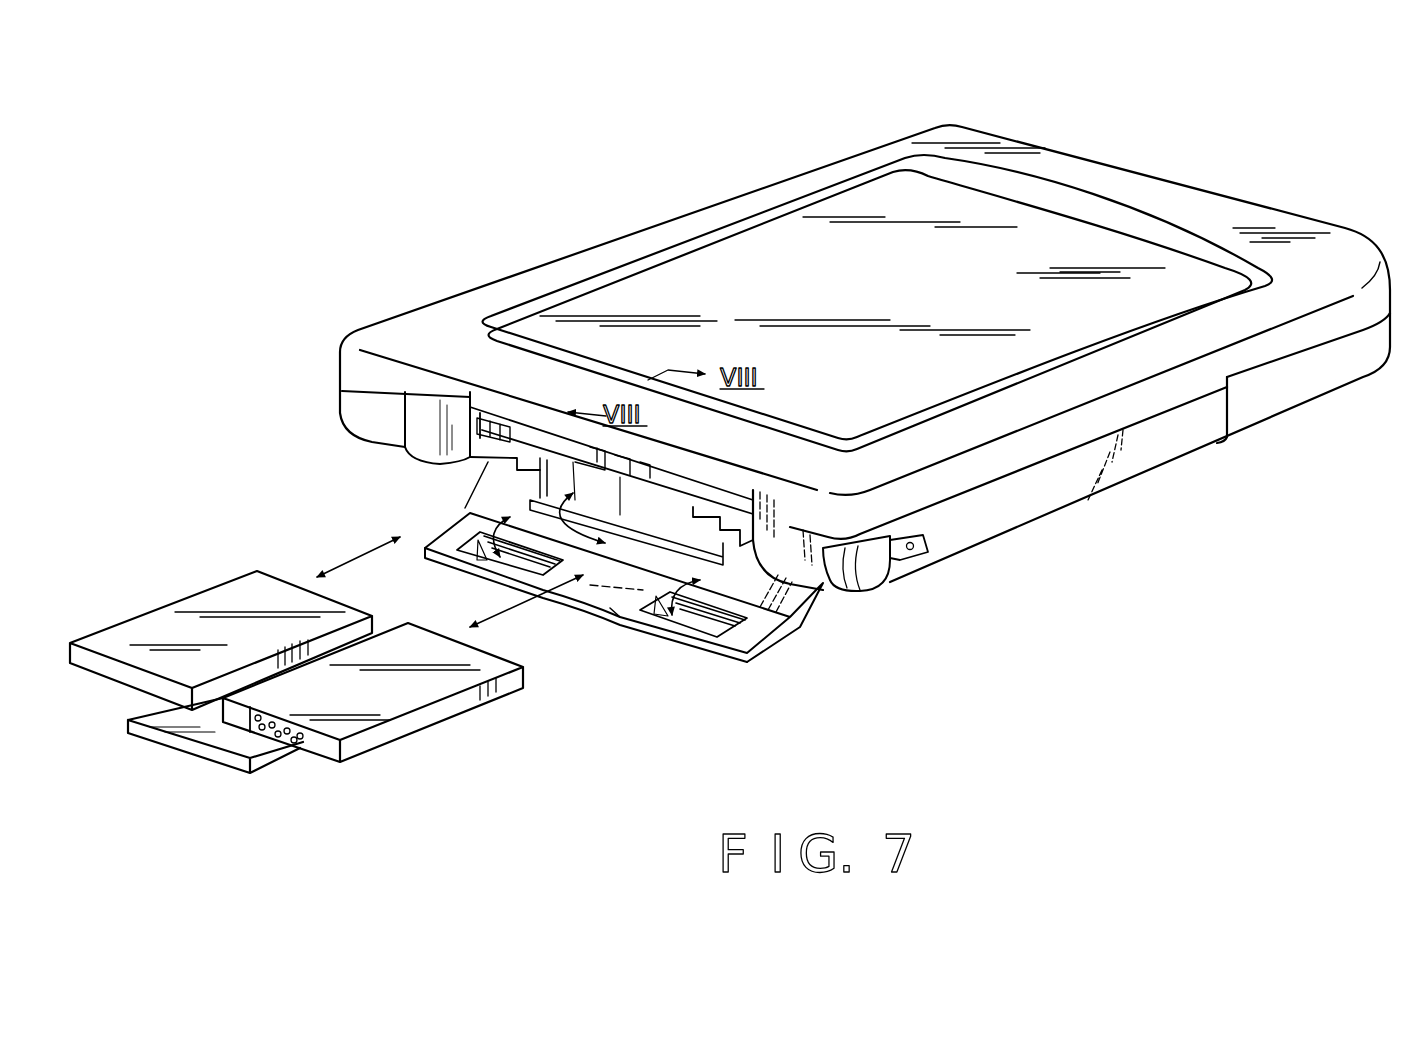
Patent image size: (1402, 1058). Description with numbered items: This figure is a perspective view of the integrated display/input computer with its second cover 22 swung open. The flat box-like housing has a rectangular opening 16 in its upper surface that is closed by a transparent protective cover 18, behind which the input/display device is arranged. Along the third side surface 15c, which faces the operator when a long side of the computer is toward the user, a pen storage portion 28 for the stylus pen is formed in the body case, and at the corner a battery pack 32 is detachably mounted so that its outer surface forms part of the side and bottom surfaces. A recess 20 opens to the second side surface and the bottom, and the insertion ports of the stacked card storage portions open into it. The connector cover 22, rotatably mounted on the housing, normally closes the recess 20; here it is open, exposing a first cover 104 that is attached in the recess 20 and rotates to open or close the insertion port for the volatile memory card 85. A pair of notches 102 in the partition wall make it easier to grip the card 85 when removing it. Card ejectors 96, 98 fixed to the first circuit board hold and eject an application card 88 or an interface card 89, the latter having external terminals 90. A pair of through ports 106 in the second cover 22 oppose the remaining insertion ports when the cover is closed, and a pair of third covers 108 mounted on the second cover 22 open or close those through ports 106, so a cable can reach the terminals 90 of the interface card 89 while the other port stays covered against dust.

The third side surface 15c is at (1146, 460).
The rectangular opening 16 is at (830, 208).
The protective cover 18 is at (772, 255).
The recess 20 is at (420, 437).
The connector cover (second cover) 22 is at (790, 636).
The pen storage portion 28 is at (876, 570).
The battery pack 32 is at (1340, 378).
The volatile memory card 85 is at (200, 768).
The application card 88 is at (218, 585).
The interface card 89 is at (450, 718).
The external terminals 90 is at (284, 752).
The card ejector 96 is at (508, 408).
The card ejector 98 is at (727, 470).
The notches 102 is at (540, 460).
The first cover 104 is at (630, 550).
The through ports 106 is at (462, 562).
The third covers 108 is at (524, 563).